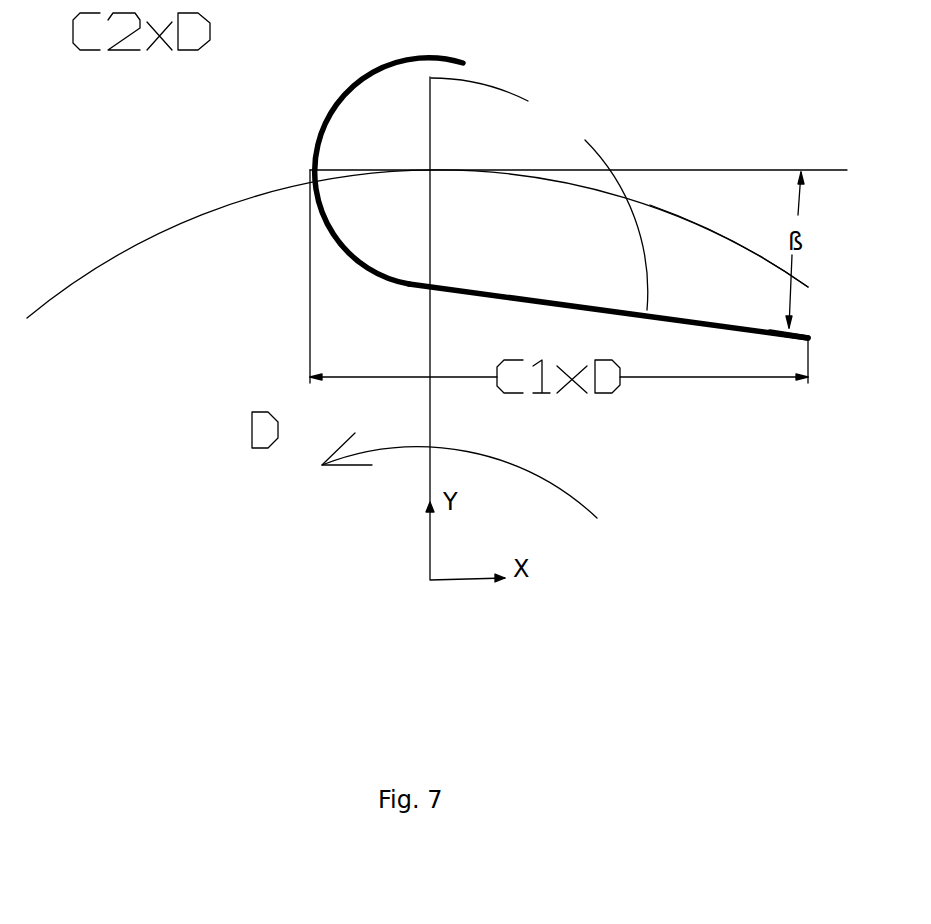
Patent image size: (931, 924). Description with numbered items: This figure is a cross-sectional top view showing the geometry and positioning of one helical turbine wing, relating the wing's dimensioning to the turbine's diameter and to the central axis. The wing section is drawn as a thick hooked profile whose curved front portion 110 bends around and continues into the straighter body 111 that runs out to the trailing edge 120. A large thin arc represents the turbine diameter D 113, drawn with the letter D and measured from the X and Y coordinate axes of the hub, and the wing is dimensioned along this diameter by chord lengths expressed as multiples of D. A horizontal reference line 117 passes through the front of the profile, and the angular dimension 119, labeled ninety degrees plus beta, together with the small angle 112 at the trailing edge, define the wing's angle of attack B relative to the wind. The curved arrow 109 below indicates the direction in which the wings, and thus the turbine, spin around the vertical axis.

The arrow indicating direction of turbine spin 109 is at (590, 518).
The hooked portion of blade 110 is at (210, 30).
The blade body 111 is at (752, 385).
The angle of attack (B) 112 is at (785, 298).
The turbine diameter (D) 113 is at (248, 430).
The horizontal reference line 117 is at (748, 164).
The angle arc 119 is at (642, 245).
The trailing edge 120 is at (800, 352).